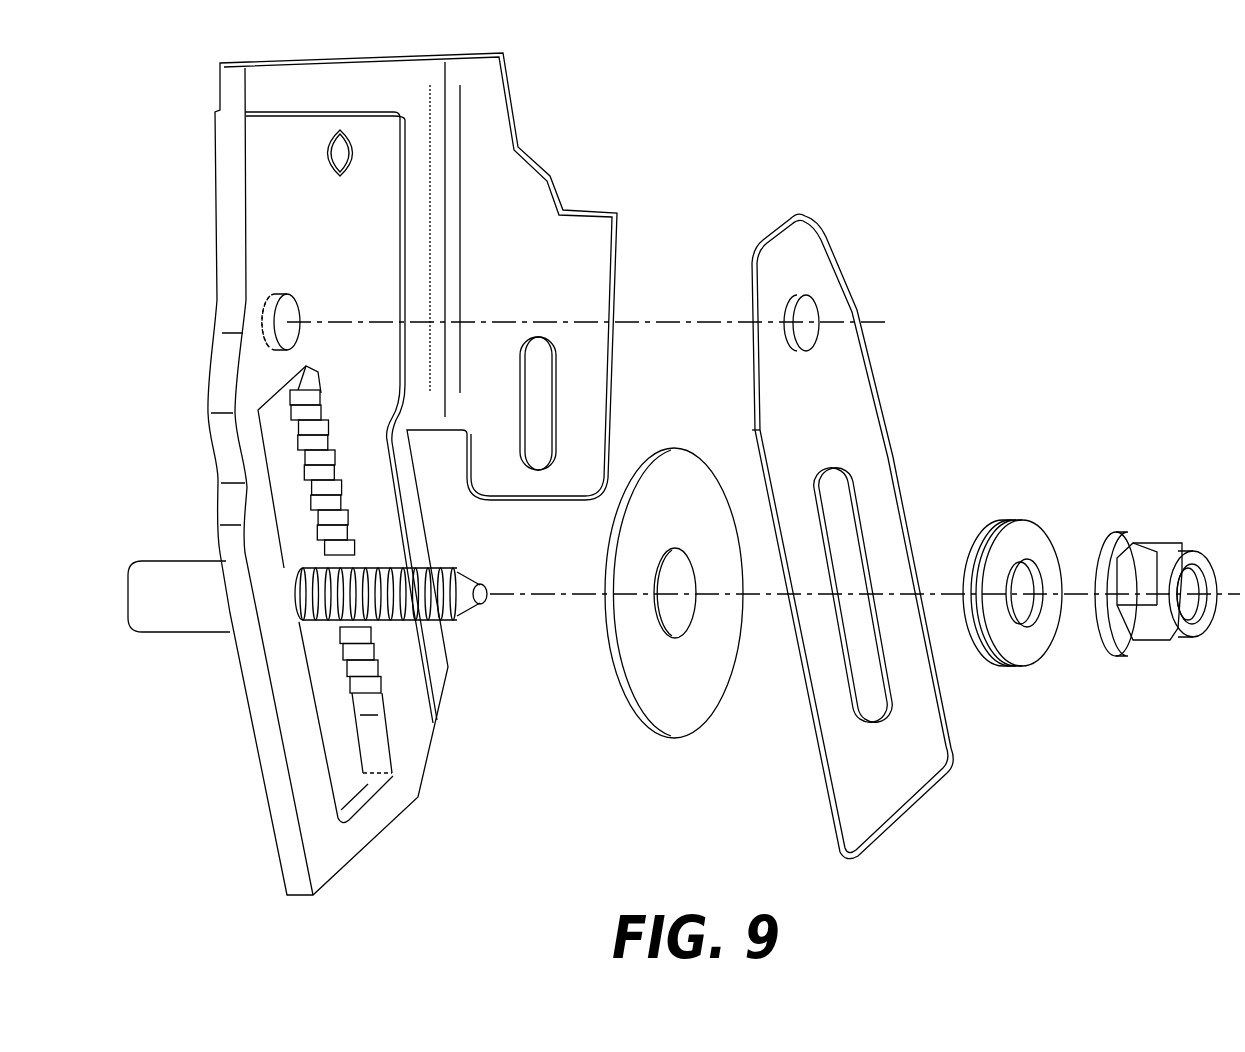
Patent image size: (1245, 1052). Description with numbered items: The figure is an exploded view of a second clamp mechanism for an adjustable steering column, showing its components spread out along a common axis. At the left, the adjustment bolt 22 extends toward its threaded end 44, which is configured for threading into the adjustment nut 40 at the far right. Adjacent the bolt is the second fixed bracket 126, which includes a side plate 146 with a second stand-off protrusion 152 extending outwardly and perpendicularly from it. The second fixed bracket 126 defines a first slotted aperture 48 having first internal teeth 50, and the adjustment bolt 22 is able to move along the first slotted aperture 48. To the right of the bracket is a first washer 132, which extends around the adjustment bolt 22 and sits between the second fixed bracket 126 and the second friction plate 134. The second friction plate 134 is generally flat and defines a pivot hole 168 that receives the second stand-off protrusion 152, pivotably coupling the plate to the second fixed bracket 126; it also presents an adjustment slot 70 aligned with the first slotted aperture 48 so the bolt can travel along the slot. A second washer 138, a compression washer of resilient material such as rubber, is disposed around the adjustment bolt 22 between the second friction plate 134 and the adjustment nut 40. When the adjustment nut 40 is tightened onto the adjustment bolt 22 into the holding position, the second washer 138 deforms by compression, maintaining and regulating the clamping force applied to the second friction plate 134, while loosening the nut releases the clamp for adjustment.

The adjustment bolt 22 is at (182, 590).
The adjustment nut 40 is at (1157, 540).
The threaded end 44 is at (450, 568).
The first slotted aperture 48 is at (314, 694).
The first internal teeth 50 is at (317, 481).
The adjustment slot 70 is at (853, 523).
The second fixed bracket 126 is at (542, 158).
The first washer 132 is at (672, 445).
The second friction plate 134 is at (852, 499).
The second washer 138 is at (1002, 516).
The side plate 146 is at (273, 232).
The second stand-off protrusion 152 is at (286, 314).
The pivot hole 168 is at (805, 315).